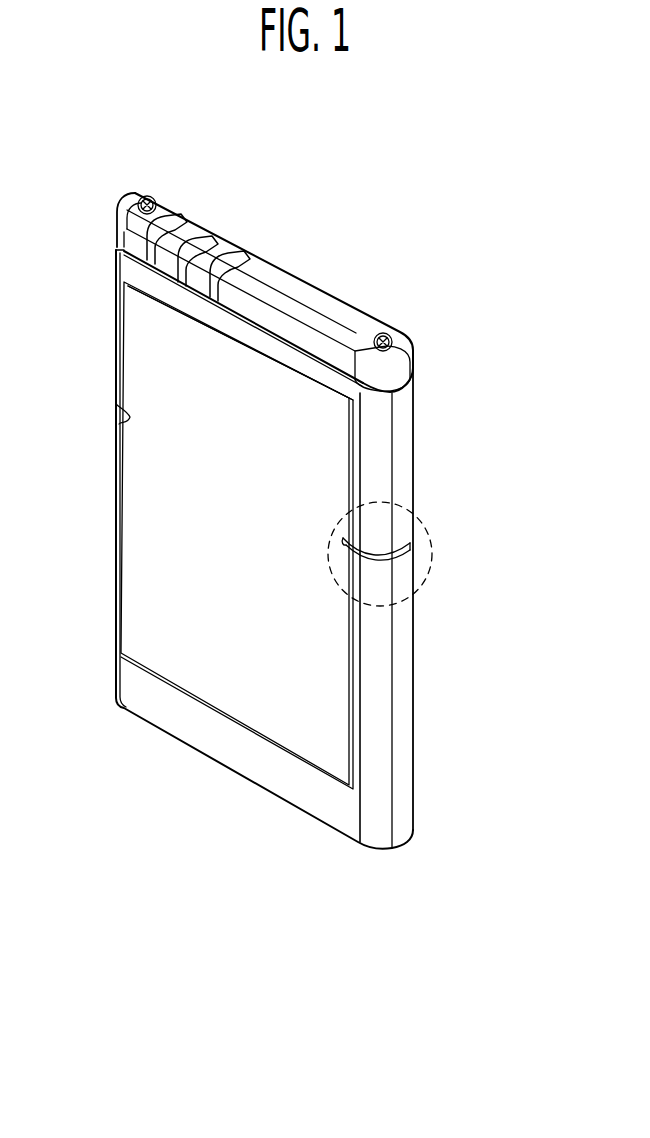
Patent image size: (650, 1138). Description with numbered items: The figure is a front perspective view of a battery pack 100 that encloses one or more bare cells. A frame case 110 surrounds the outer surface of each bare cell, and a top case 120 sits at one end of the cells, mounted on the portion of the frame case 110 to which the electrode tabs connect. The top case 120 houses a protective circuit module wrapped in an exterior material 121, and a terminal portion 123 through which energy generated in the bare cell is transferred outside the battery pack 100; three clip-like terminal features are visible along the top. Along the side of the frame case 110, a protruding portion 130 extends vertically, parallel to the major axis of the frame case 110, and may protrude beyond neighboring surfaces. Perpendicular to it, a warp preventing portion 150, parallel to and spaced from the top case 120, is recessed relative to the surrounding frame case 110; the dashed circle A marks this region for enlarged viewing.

The battery pack 100 is at (106, 206).
The frame case 110 is at (415, 627).
The top case 120 is at (321, 195).
The exterior material 121 is at (258, 268).
The terminal portion 123 is at (229, 265).
The protruding portion 130 is at (355, 476).
The warp preventing portion 150 is at (411, 551).
The detail region A is at (428, 573).